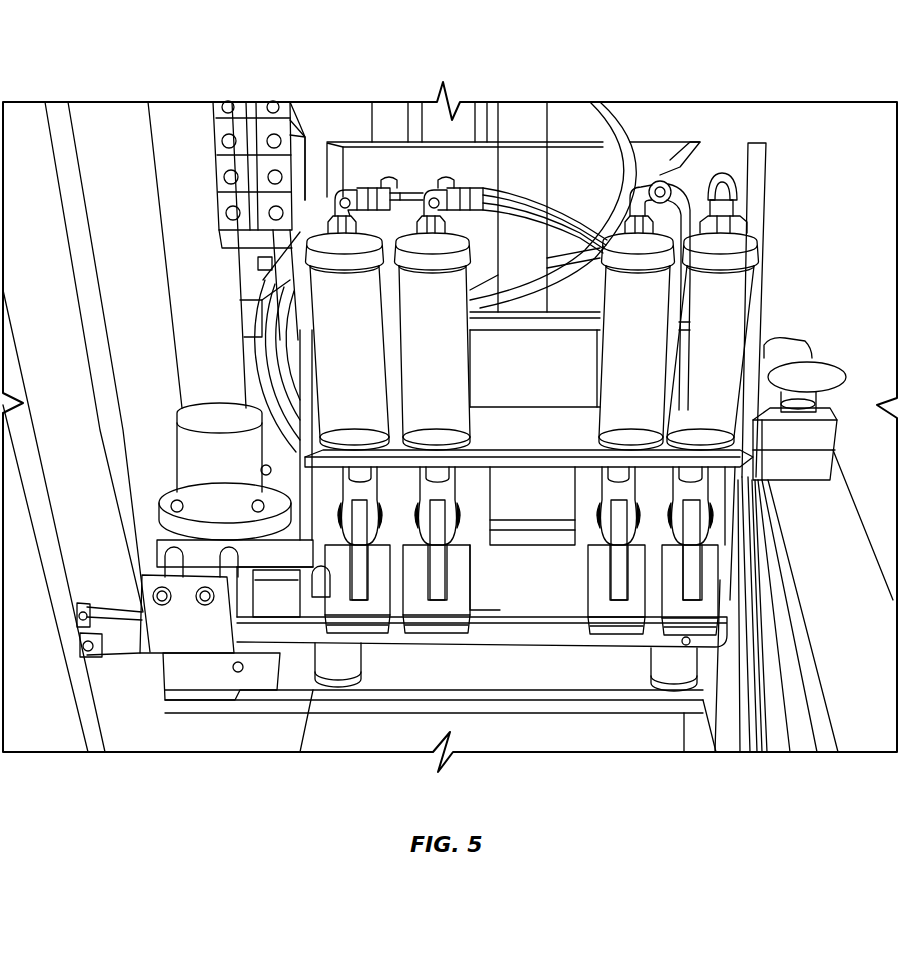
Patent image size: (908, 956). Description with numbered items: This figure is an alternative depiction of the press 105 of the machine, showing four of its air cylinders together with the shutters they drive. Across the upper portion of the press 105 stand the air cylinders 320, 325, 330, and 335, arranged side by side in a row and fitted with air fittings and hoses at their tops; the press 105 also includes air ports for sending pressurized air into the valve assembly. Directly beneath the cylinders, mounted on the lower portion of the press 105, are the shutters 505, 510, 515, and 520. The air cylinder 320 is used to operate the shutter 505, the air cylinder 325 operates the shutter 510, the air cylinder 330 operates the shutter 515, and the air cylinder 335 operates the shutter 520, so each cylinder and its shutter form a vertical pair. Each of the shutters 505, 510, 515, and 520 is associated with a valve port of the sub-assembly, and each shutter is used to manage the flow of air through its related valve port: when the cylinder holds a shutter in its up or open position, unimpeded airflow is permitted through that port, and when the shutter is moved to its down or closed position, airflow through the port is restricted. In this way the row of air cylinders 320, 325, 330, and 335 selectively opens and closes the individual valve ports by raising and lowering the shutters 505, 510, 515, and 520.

The press 105 is at (568, 58).
The air cylinder 320 is at (744, 227).
The air cylinder 325 is at (668, 183).
The air cylinder 330 is at (407, 265).
The air cylinder 335 is at (322, 268).
The shutter 505 is at (675, 603).
The shutter 510 is at (605, 603).
The shutter 515 is at (422, 603).
The shutter 520 is at (350, 603).